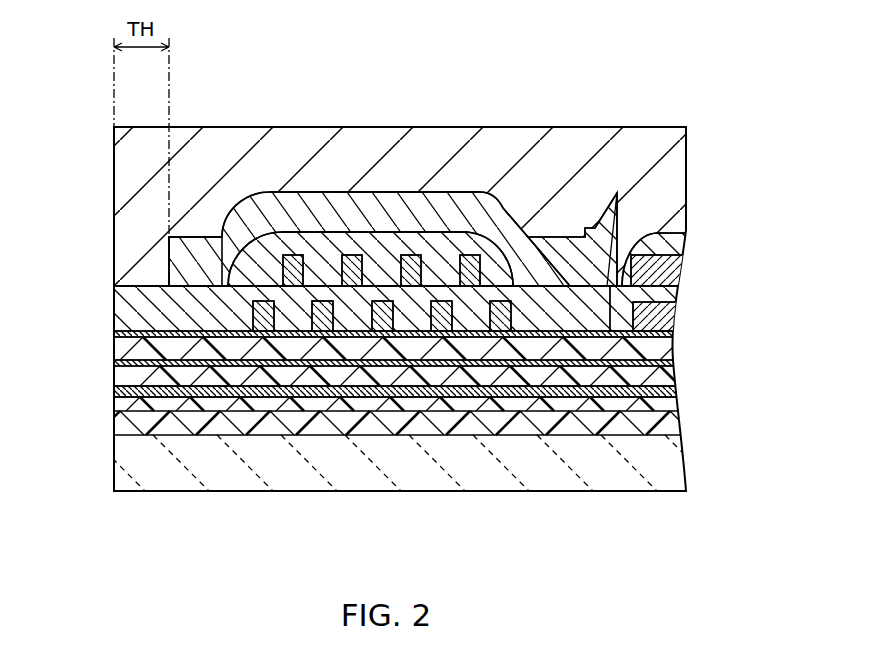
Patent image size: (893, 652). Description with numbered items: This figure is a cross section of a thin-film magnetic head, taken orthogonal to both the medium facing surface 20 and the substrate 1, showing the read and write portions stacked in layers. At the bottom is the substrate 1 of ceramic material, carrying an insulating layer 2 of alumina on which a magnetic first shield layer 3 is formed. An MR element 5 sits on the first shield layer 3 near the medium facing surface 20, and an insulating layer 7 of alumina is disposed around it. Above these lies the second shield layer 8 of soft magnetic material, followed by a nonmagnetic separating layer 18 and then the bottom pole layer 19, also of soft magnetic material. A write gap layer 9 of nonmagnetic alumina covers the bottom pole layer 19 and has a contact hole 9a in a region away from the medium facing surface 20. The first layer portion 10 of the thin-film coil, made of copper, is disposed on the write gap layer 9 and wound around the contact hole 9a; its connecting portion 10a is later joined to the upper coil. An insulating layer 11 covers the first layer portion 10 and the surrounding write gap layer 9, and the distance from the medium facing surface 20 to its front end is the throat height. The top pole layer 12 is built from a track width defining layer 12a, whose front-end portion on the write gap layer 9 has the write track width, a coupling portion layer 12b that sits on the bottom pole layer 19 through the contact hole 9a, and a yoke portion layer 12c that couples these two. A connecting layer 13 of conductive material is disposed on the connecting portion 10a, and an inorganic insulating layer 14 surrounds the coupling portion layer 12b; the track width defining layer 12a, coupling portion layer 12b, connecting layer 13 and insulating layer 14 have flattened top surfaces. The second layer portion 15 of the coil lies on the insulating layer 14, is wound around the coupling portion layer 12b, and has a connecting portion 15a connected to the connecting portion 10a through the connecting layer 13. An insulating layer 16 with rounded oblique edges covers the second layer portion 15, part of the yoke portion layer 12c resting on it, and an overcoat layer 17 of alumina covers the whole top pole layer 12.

The substrate 1 is at (405, 483).
The insulating layer 2 is at (437, 420).
The first shield layer 3 is at (467, 408).
The MR element 5 is at (116, 404).
The insulating layer 7 is at (207, 400).
The second shield layer 8 is at (267, 345).
The write gap layer 9 is at (298, 337).
The contact hole 9a is at (572, 335).
The first layer portion of thin-film coil 10 is at (323, 325).
The connecting portion of first layer portion 10a is at (668, 325).
The insulating layer 11 is at (352, 392).
The top pole layer 12 is at (284, 191).
The track width defining layer 12a is at (143, 290).
The coupling portion layer 12b is at (585, 305).
The yoke portion layer 12c is at (430, 198).
The connecting layer 13 is at (636, 334).
The insulating layer 14 is at (600, 300).
The second layer portion of thin-film coil 15 is at (343, 258).
The connecting portion of second layer portion 15a is at (652, 240).
The insulating layer 16 is at (378, 240).
The overcoat layer 17 is at (240, 140).
The separating layer 18 is at (502, 363).
The bottom pole layer 19 is at (538, 355).
The medium facing surface 20 is at (117, 353).